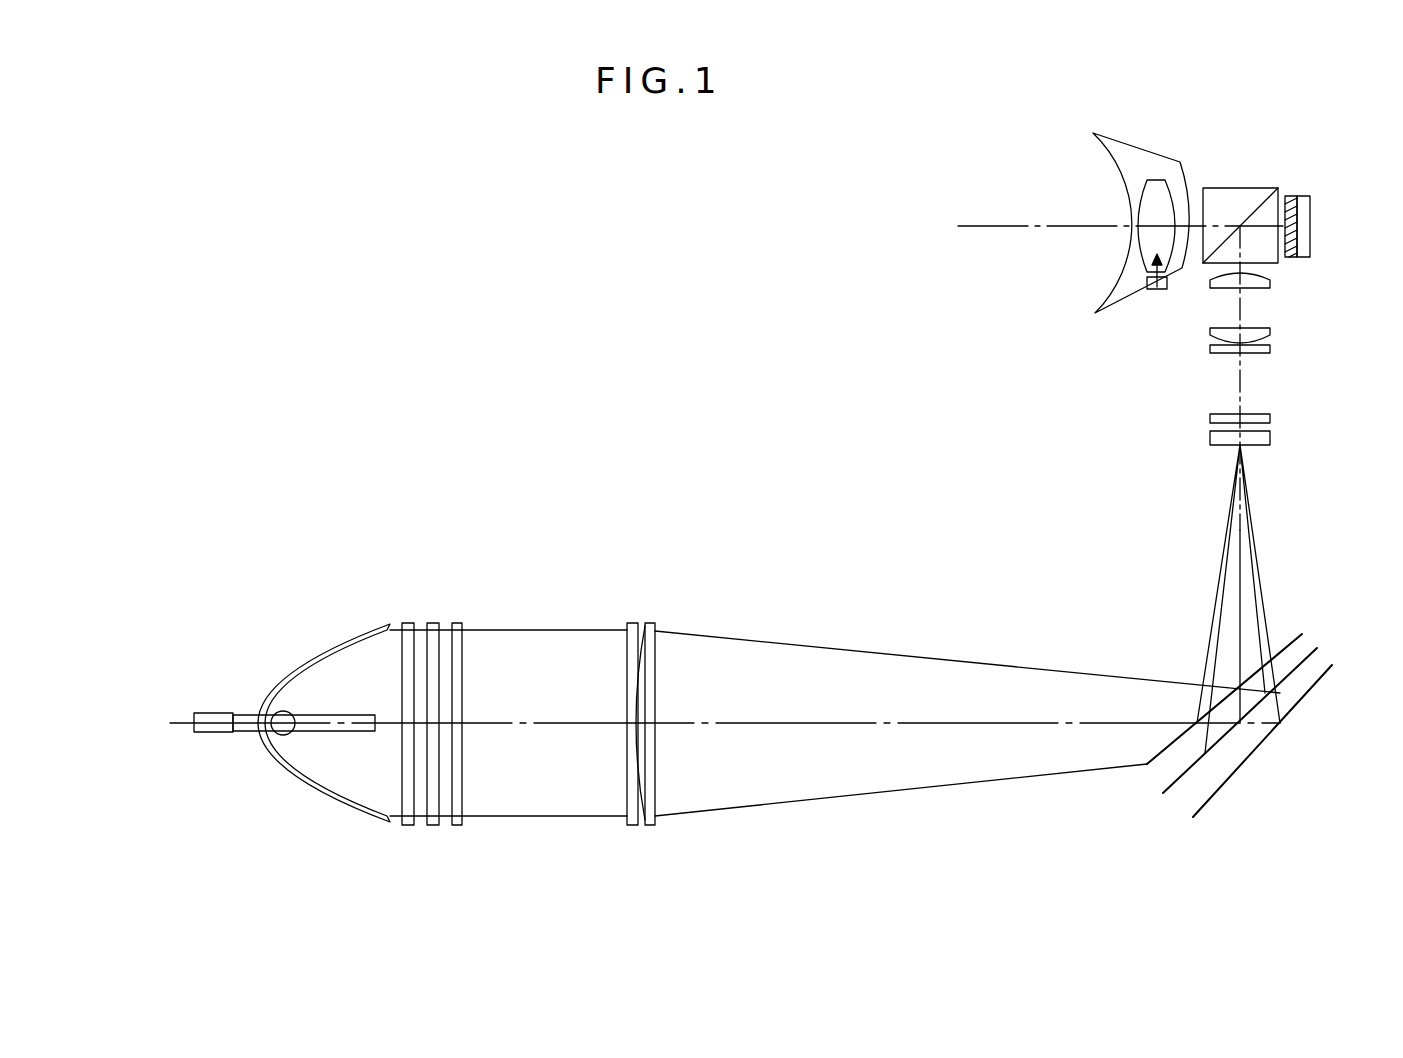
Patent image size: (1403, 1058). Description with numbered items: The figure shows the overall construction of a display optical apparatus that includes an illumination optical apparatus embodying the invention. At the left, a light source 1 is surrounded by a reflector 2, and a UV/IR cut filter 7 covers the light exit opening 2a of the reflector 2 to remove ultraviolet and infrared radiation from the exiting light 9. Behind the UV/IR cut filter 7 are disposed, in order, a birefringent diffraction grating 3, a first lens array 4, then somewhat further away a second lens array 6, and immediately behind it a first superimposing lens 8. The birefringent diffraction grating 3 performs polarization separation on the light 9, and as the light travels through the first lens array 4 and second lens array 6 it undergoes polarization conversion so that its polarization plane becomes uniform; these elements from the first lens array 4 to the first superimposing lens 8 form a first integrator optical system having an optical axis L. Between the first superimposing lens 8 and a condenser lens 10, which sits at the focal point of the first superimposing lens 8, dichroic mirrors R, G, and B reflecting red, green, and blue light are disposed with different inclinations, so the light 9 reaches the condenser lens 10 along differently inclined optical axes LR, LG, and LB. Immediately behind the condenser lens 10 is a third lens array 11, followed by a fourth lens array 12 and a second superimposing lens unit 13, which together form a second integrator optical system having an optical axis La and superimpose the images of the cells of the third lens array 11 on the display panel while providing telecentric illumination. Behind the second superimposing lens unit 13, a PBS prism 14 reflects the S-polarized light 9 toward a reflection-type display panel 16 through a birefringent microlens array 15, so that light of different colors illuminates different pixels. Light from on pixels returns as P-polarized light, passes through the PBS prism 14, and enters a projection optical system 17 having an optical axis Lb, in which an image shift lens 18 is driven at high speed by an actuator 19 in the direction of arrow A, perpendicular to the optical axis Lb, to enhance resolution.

The light source 1 is at (281, 712).
The reflector 2 is at (281, 766).
The light exit opening 2a is at (387, 647).
The birefringent diffraction grating 3 is at (433, 828).
The first lens array 4 is at (457, 828).
The second lens array 6 is at (631, 828).
The UV/IR cut filter 7 is at (408, 828).
The first superimposing lens 8 is at (648, 828).
The light 9 is at (536, 826).
The condenser lens 10 is at (1272, 440).
The third lens array 11 is at (1208, 418).
The fourth lens array 12 is at (1208, 348).
The second superimposing lens unit 13 is at (1272, 333).
The PBS prism 14 is at (1240, 187).
The birefringent microlens array 15 is at (1290, 196).
The display panel 16 is at (1304, 258).
The projection optical system 17 is at (1071, 163).
The image shift lens 18 is at (1156, 179).
The actuator 19 is at (1152, 290).
The arrow A is at (1139, 278).
The optical axis L is at (806, 725).
The optical axis La is at (1243, 381).
The optical axis Lb is at (980, 221).
The optical axis LR is at (1216, 578).
The optical axis LG is at (1244, 532).
The optical axis LB is at (1262, 590).
The dichroic mirror R is at (1148, 765).
The dichroic mirror G is at (1166, 793).
The dichroic mirror B is at (1195, 820).